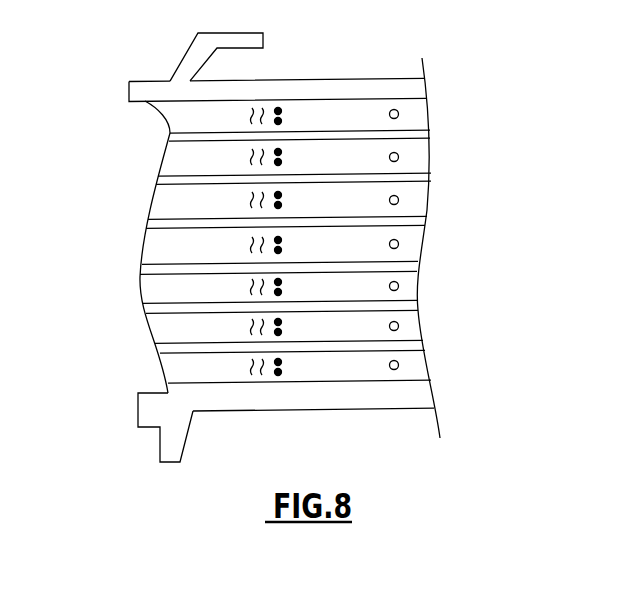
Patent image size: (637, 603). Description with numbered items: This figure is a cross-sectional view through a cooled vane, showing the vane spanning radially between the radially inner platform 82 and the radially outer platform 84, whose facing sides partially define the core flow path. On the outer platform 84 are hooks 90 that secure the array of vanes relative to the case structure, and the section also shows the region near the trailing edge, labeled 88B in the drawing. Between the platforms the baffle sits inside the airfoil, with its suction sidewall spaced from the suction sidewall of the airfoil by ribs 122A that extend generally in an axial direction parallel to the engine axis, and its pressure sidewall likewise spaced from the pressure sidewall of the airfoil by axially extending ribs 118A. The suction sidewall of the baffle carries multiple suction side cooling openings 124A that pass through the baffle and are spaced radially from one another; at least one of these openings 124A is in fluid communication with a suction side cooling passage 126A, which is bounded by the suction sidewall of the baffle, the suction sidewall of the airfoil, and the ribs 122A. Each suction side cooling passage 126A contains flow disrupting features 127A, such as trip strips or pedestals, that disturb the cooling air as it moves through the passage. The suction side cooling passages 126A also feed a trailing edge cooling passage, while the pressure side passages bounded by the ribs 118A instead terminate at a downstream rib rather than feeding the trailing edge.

The radially inner platform 82 is at (150, 407).
The radially outer platform 84 is at (145, 86).
The hooks 90 is at (242, 33).
The curved side wall 88B is at (140, 250).
The ribs 118A is at (412, 266).
The ribs 122A is at (173, 138).
The suction side cooling openings 124A is at (412, 114).
The suction side cooling passage 126A is at (174, 288).
The flow disrupting features 127A is at (255, 102).